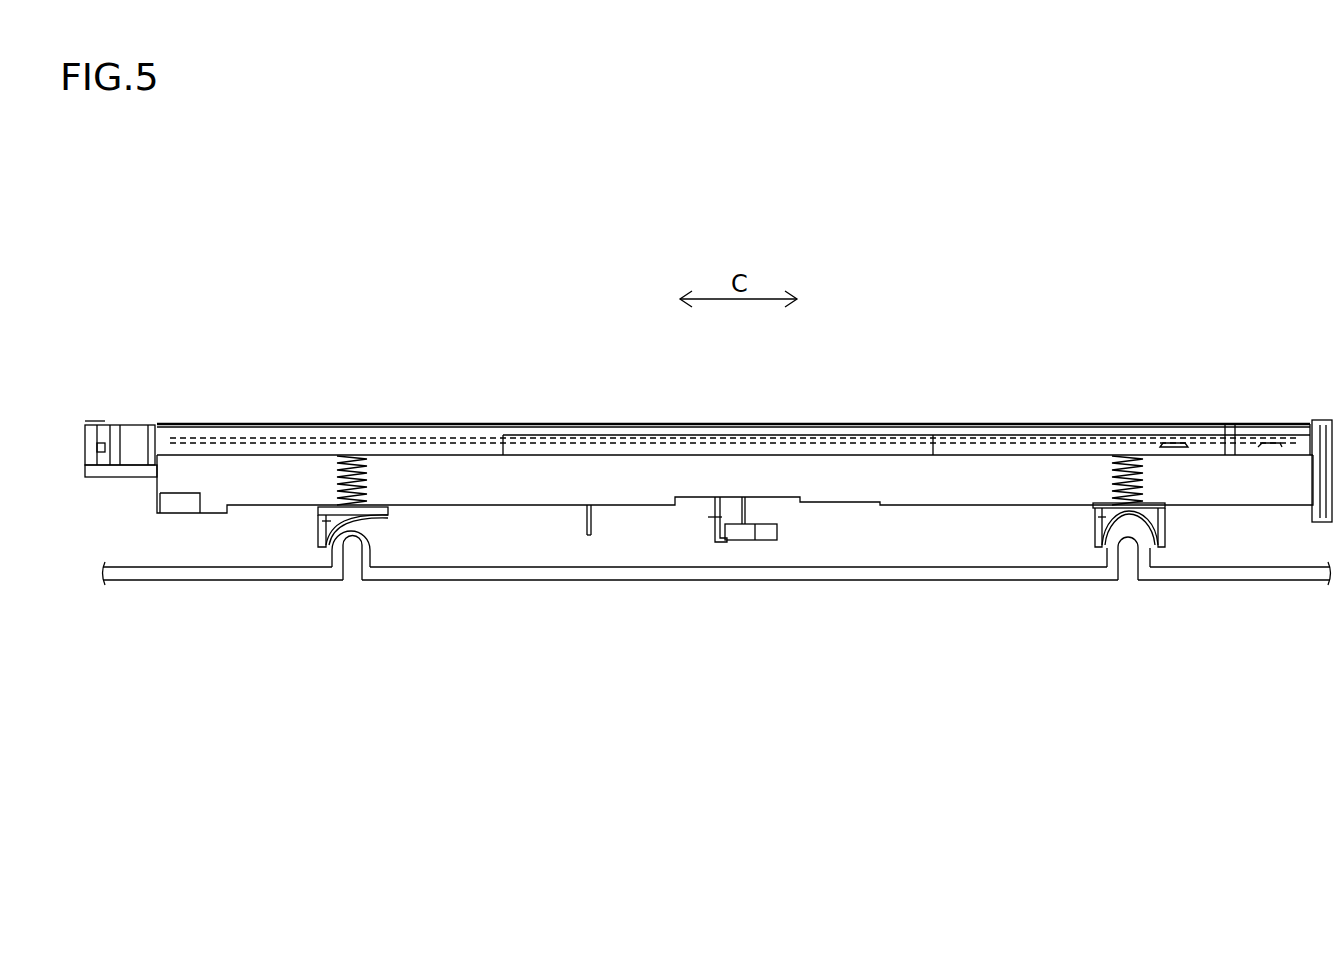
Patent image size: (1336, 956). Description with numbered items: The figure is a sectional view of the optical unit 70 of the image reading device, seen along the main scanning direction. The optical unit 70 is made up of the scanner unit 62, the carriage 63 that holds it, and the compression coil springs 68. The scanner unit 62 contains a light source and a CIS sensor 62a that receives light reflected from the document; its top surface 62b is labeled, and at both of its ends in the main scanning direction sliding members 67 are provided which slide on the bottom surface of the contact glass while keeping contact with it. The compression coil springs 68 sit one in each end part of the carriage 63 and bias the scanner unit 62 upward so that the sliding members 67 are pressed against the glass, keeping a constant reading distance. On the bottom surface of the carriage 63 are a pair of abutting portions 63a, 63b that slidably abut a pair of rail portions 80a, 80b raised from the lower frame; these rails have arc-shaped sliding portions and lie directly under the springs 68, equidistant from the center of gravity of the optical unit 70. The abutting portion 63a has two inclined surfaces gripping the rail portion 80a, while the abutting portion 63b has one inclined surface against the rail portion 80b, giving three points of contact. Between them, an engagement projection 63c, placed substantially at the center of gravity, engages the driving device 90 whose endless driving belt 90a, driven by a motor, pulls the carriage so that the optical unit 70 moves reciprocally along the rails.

The optical unit 70 is at (1150, 348).
The scanner unit 62 is at (979, 434).
The CIS sensor 62a is at (465, 442).
The top surface of upper plate 62b is at (555, 423).
The carriage 63 is at (1053, 477).
The abutting portion 63a is at (1093, 535).
The abutting portion 63b is at (313, 540).
The engagement projection 63c is at (722, 518).
The sliding member 67 is at (95, 423).
The compression coil spring 68 is at (352, 455).
The rail portion 80a is at (1143, 554).
The rail portion 80b is at (368, 557).
The driving device 90 is at (751, 597).
The driving belt 90a is at (748, 533).